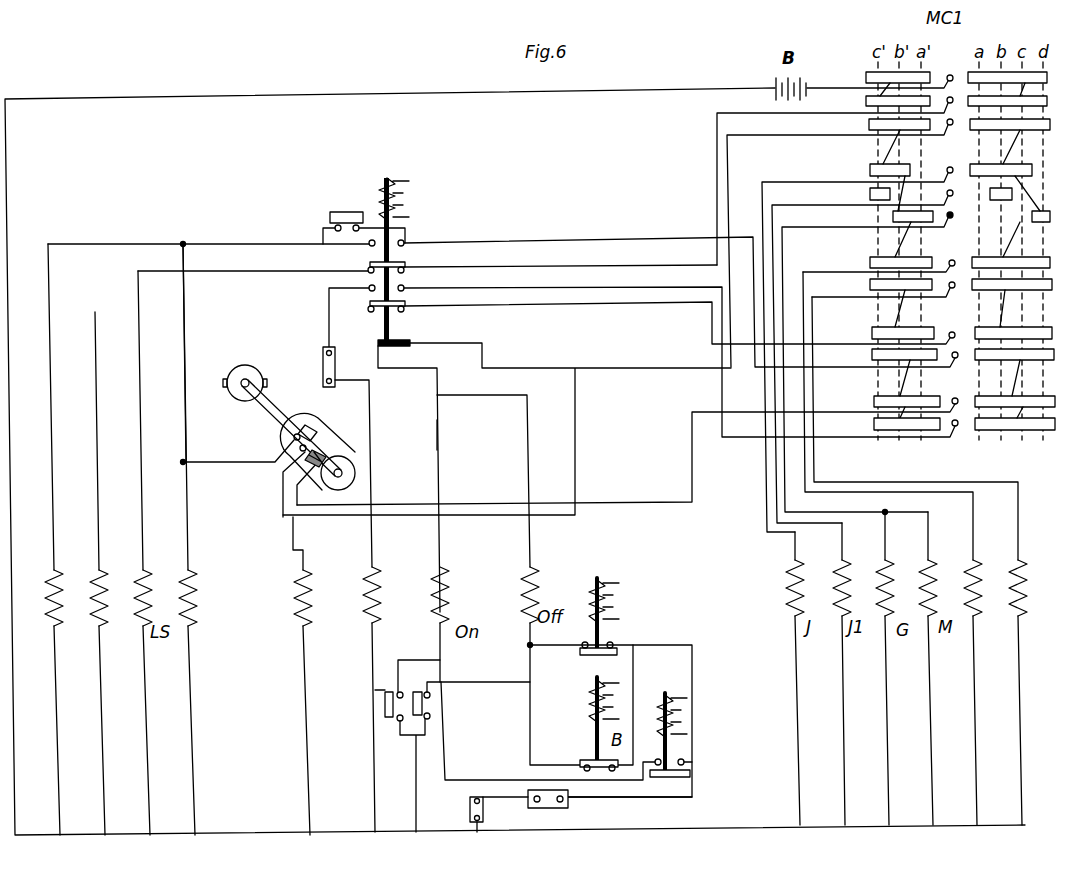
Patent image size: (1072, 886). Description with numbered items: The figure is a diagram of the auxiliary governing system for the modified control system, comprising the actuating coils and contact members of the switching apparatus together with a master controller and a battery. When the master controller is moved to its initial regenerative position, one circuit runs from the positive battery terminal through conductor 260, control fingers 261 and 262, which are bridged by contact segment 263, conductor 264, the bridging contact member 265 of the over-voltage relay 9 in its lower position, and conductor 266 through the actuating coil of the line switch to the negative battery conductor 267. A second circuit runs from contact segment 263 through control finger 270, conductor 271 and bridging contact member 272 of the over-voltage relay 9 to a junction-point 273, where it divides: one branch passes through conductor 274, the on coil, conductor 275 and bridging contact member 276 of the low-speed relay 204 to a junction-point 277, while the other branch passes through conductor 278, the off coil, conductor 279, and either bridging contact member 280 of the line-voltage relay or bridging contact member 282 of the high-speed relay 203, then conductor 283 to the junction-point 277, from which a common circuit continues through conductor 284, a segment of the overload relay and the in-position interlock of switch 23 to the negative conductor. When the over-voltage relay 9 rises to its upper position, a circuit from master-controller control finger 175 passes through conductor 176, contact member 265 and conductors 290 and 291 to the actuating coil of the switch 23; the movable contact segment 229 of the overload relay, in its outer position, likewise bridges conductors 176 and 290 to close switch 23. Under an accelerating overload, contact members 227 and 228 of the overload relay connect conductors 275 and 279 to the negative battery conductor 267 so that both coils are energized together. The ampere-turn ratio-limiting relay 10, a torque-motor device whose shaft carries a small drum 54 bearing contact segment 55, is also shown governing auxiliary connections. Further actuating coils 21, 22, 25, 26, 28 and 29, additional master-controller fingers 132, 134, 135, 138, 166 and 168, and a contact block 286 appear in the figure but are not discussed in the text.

The over-voltage relay 9 is at (405, 243).
The ampere-turn ratio-limiting relay 10 is at (252, 450).
The relay coil 21 is at (902, 548).
The relay coil 22 is at (930, 561).
The switch 23 is at (331, 539).
The relay and out-contact 25 is at (231, 573).
The relay coil 26 is at (64, 539).
The relay coil 28 is at (318, 676).
The relay coil 29 is at (386, 699).
The drum 54 is at (333, 449).
The contact segment 55 is at (321, 426).
The selector contact 132 is at (884, 356).
The selector contact 134 is at (888, 255).
The selector contact 135 is at (899, 280).
The selector contact 138 is at (692, 323).
The selector contact 166 is at (939, 162).
The selector contact 168 is at (880, 349).
The master-controller control finger 175 is at (694, 302).
The conductor 176 is at (870, 440).
The high-speed relay 203 is at (648, 634).
The low-speed relay 204 is at (661, 733).
The contact member 227 is at (372, 688).
The contact member 228 is at (463, 746).
The movable contact segment 229 is at (361, 218).
The conductor 260 is at (823, 87).
The control finger 261 is at (952, 69).
The control finger 262 is at (966, 91).
The contact segment 263 is at (868, 96).
The conductor 264 is at (718, 147).
The bridging contact member 265 is at (405, 289).
The conductor 266 is at (264, 272).
The negative battery conductor 267 is at (353, 99).
The control finger 270 is at (966, 112).
The conductor 271 is at (812, 140).
The bridging contact member 272 is at (397, 343).
The junction-point 273 is at (437, 396).
The conductor 274 is at (437, 433).
The conductor 275 is at (481, 781).
The bridging contact member 276 is at (670, 783).
The junction-point 277 is at (694, 761).
The conductor 278 is at (501, 397).
The conductor 279 is at (530, 745).
The bridging contact member 280 is at (588, 760).
The bridging contact member 282 is at (590, 642).
The conductor 283 is at (692, 645).
The conductor 284 is at (692, 797).
The contact block 286 is at (526, 807).
The conductor 290 is at (262, 243).
The conductor 291 is at (183, 362).